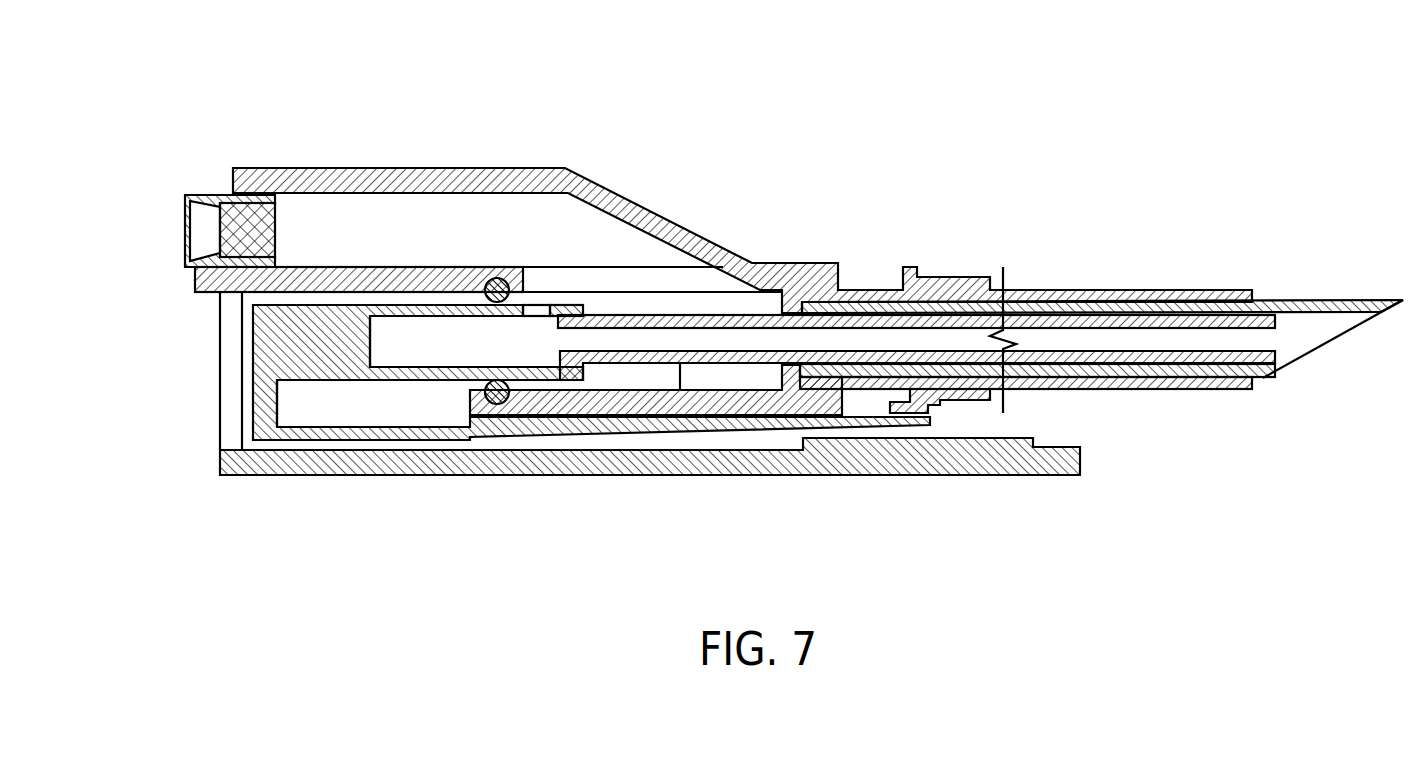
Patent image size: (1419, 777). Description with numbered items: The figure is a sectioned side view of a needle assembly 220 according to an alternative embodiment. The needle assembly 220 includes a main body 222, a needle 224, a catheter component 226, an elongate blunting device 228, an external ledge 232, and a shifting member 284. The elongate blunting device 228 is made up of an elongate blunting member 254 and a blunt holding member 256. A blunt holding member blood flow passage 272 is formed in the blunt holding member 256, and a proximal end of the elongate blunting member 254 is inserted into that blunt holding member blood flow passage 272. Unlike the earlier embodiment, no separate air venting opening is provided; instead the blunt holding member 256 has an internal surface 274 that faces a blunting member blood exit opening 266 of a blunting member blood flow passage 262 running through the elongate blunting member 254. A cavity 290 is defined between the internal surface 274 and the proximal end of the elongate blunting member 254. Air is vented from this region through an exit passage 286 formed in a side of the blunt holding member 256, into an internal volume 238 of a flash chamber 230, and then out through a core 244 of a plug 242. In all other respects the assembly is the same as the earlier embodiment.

The needle assembly 220 is at (310, 94).
The main body 222 is at (430, 150).
The needle 224 is at (1328, 299).
The catheter component 226 is at (1112, 244).
The elongate blunting device 228 is at (678, 368).
The flash chamber 230 is at (540, 167).
The external ledge 232 is at (968, 462).
The internal volume 238 is at (507, 246).
The plug 242 is at (213, 193).
The core 244 is at (258, 230).
The elongate blunting member 254 is at (1207, 358).
The blunt holding member 256 is at (449, 380).
The blunting member blood flow passage 262 is at (1114, 338).
The blunting member blood exit opening 266 is at (565, 340).
The blunt holding member blood flow passage 272 is at (418, 348).
The internal surface 274 is at (372, 347).
The shifting member 284 is at (928, 413).
The exit passage 286 is at (533, 308).
The cavity 290 is at (503, 358).